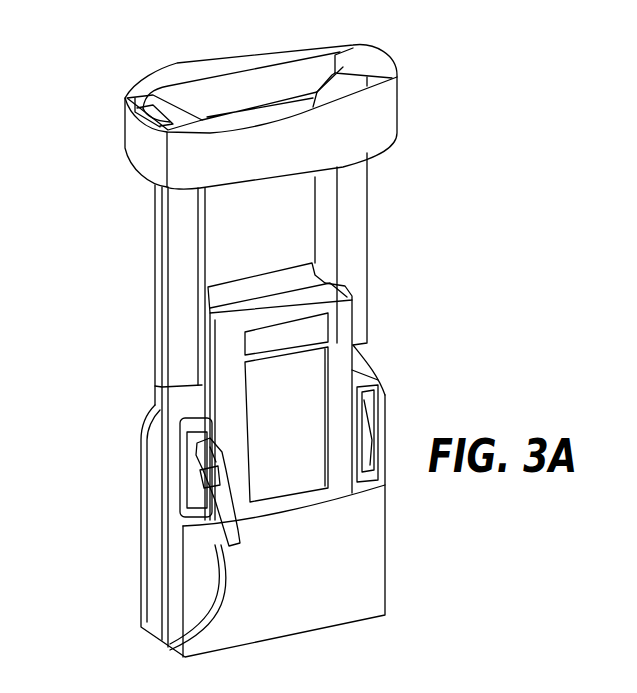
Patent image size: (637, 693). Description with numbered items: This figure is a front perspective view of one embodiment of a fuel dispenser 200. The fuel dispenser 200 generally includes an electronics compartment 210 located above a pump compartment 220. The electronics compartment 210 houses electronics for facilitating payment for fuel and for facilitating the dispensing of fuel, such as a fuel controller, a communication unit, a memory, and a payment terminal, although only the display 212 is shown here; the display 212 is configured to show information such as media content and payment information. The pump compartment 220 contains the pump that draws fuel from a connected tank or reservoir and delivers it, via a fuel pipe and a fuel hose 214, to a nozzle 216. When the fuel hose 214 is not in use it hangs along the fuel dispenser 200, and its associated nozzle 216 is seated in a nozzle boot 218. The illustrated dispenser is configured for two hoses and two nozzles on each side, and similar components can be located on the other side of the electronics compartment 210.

The fuel dispenser 200 is at (108, 78).
The electronics compartment 210 is at (207, 353).
The display 212 is at (310, 427).
The fuel hose 214 is at (212, 613).
The nozzle 216 is at (197, 470).
The nozzle boot 218 is at (187, 425).
The pump compartment 220 is at (202, 573).